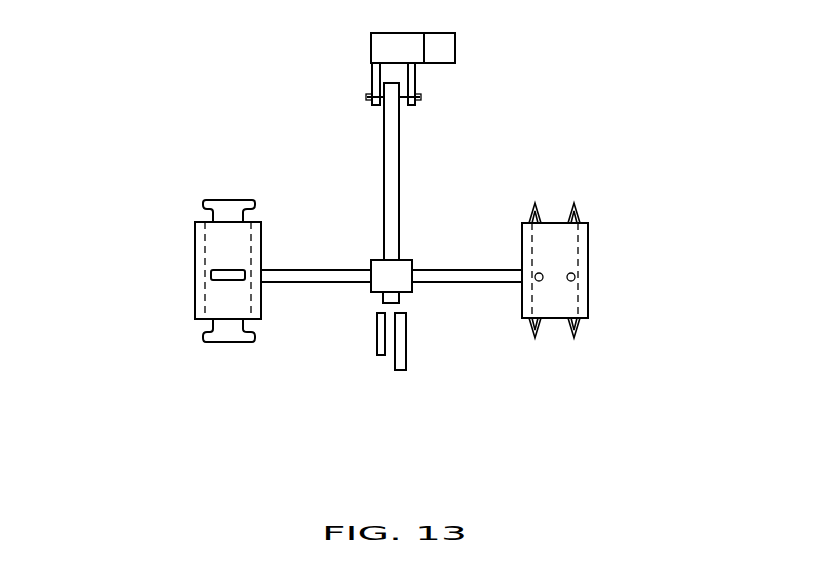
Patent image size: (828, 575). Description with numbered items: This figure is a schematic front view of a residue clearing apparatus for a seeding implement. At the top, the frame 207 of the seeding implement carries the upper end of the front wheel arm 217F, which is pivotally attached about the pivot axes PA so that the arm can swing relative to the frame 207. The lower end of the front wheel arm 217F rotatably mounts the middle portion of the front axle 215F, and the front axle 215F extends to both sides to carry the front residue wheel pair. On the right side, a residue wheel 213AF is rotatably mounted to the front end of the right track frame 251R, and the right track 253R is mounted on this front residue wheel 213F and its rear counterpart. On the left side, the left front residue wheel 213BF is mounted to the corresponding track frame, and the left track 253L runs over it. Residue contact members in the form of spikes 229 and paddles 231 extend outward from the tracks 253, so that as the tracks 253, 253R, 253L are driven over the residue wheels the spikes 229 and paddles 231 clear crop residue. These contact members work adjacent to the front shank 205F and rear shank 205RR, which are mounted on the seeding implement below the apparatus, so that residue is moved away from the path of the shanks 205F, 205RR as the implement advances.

The frame 207 is at (455, 45).
The pivot axes PA is at (366, 97).
The front wheel arm 217F is at (400, 165).
The front residue wheel 213F is at (309, 283).
The front axle 215F is at (467, 283).
The residue wheel 213AF is at (205, 288).
The right track frame 251R is at (227, 268).
The paddles 231 is at (207, 203).
The tracks 253 is at (152, 342).
The right track 253R is at (200, 323).
The left front residue wheel 213BF is at (578, 248).
The spikes 229 is at (578, 212).
The left track 253L is at (555, 323).
The rear shank 205RR is at (380, 355).
The front shank 205F is at (400, 370).